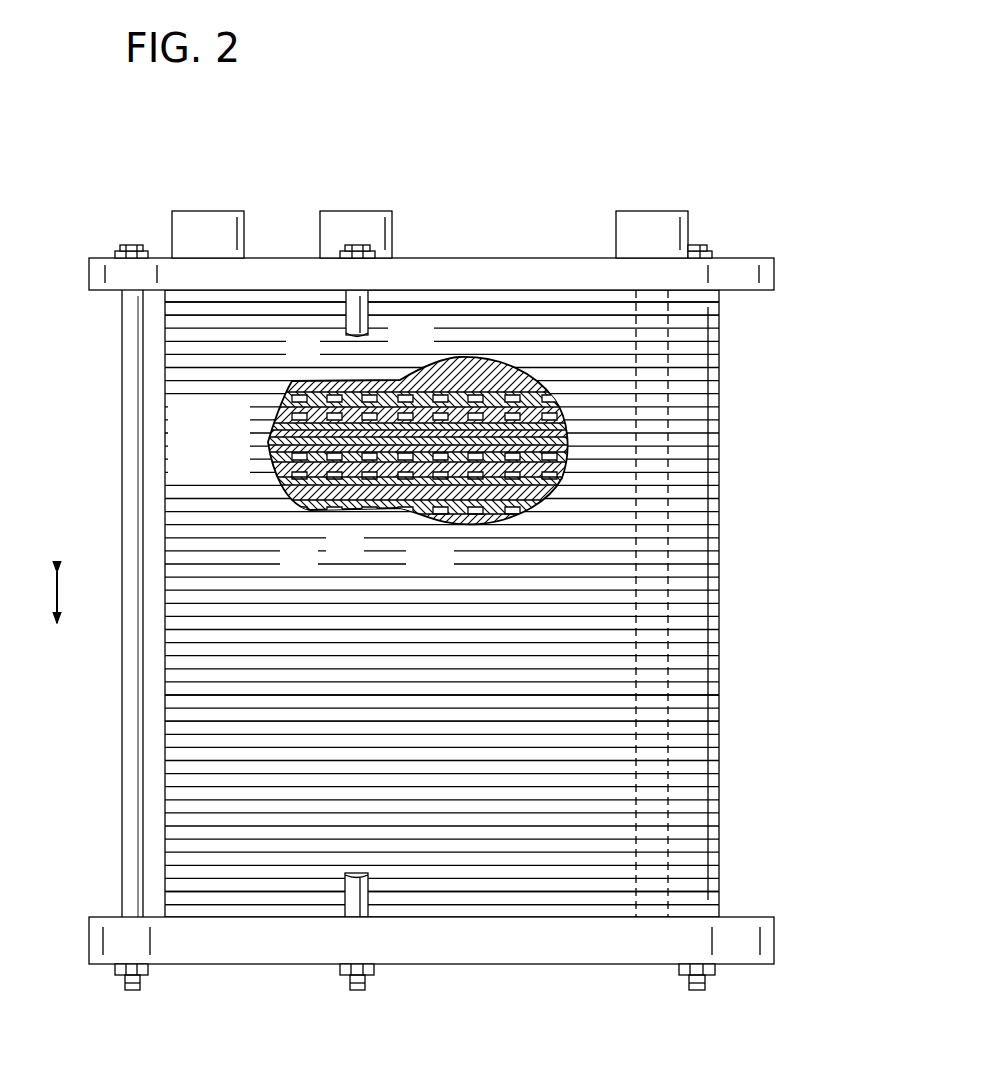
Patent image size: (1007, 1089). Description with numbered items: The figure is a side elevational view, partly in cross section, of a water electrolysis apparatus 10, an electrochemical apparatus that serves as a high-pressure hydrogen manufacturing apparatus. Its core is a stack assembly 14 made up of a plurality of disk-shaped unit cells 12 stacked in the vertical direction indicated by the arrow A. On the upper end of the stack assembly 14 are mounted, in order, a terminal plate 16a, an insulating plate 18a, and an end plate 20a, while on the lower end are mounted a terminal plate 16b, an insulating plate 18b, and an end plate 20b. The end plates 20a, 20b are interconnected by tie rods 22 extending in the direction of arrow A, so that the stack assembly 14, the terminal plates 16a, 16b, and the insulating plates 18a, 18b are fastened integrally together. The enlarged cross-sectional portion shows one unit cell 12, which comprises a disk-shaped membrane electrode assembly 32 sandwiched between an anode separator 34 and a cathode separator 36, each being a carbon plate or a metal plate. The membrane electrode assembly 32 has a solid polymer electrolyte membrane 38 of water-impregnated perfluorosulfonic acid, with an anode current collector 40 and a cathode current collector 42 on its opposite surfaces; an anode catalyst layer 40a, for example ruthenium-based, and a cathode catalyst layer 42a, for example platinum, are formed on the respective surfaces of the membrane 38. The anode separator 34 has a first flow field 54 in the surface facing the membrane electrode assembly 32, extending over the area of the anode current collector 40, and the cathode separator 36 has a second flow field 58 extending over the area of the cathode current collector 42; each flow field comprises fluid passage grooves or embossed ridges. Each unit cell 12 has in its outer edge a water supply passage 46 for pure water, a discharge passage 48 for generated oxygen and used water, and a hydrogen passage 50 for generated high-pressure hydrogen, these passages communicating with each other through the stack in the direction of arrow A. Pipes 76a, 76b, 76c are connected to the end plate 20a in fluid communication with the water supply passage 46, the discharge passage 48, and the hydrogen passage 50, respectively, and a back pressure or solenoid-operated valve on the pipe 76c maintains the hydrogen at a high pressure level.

The water electrolysis apparatus 10 is at (540, 137).
The unit cell 12 is at (163, 693).
The stack assembly 14 is at (68, 725).
The terminal plate 16a is at (550, 302).
The terminal plate 16b is at (270, 898).
The insulating plate 18a is at (488, 297).
The insulating plate 18b is at (212, 913).
The end plate 20a is at (757, 258).
The end plate 20b is at (404, 965).
The tie rod 22 is at (133, 800).
The membrane electrode assembly 32 is at (376, 416).
The anode separator 34 is at (388, 390).
The cathode separator 36 is at (388, 478).
The solid polymer electrolyte membrane 38 is at (276, 442).
The anode current collector 40 is at (401, 347).
The anode catalyst layer 40a is at (418, 388).
The cathode current collector 42 is at (401, 513).
The cathode catalyst layer 42a is at (425, 488).
The water supply passage 46 is at (172, 223).
The discharge passage 48 is at (328, 223).
The hydrogen passage 50 is at (667, 768).
The first flow field 54 is at (300, 382).
The second flow field 58 is at (305, 505).
The pipe 76a is at (183, 190).
The pipe 76b is at (338, 190).
The pipe 76c is at (688, 233).